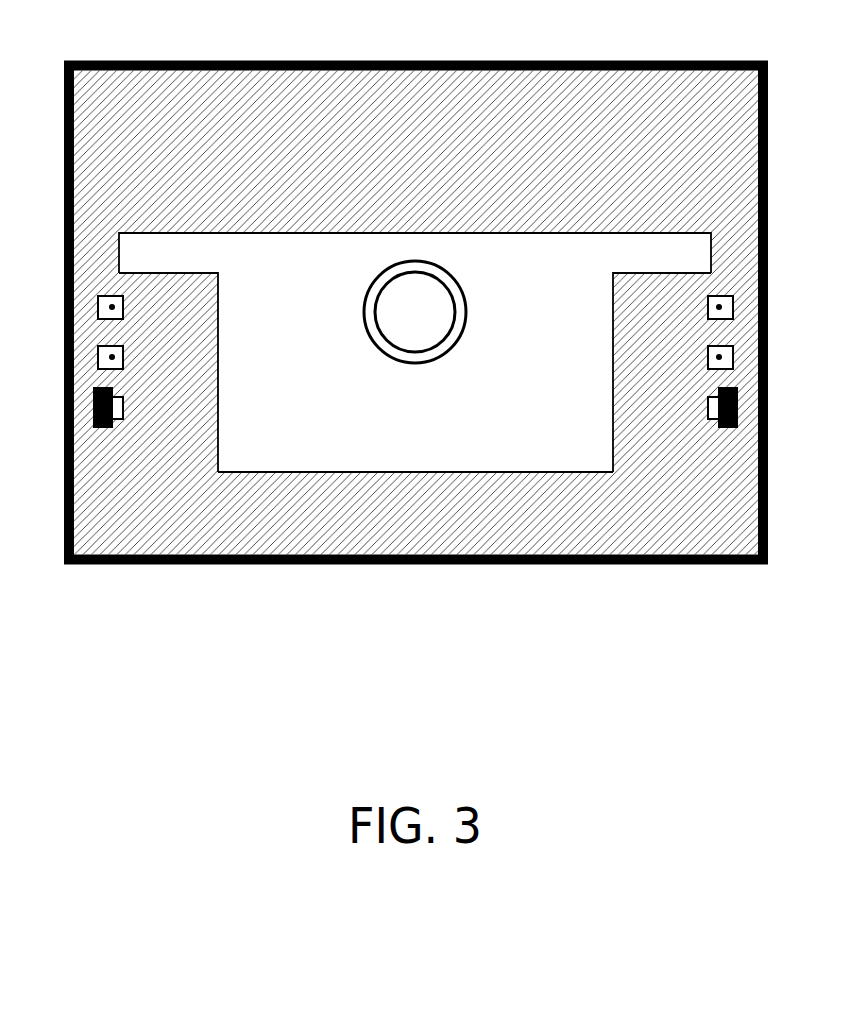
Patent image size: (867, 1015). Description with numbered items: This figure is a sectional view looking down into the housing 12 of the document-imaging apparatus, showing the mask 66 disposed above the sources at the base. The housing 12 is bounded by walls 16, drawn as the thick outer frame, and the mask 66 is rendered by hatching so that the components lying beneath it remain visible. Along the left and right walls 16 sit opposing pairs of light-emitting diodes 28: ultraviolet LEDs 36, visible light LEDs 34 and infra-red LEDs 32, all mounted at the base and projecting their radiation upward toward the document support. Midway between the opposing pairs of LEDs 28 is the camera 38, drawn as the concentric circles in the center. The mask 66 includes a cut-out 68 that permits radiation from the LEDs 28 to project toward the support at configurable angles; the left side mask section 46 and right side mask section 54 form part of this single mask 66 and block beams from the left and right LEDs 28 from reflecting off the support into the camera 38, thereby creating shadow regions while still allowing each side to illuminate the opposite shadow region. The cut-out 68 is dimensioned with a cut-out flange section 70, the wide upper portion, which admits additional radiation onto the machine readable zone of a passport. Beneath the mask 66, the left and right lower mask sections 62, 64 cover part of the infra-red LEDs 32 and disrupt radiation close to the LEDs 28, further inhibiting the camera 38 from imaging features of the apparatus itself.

The housing 12 is at (416, 307).
The walls 16 is at (173, 60).
The light-emitting diodes 28 is at (415, 363).
The infra-red LEDs 32 is at (90, 427).
The visible light LEDs 34 is at (98, 348).
The ultraviolet LEDs 36 is at (98, 297).
The camera 38 is at (460, 322).
The left side mask section 46 is at (200, 343).
The right side mask section 54 is at (631, 343).
The left lower mask section 62 is at (93, 413).
The right lower mask section 64 is at (738, 413).
The mask 66 is at (360, 123).
The cut-out 68 is at (419, 240).
The cut-out flange section 70 is at (133, 240).